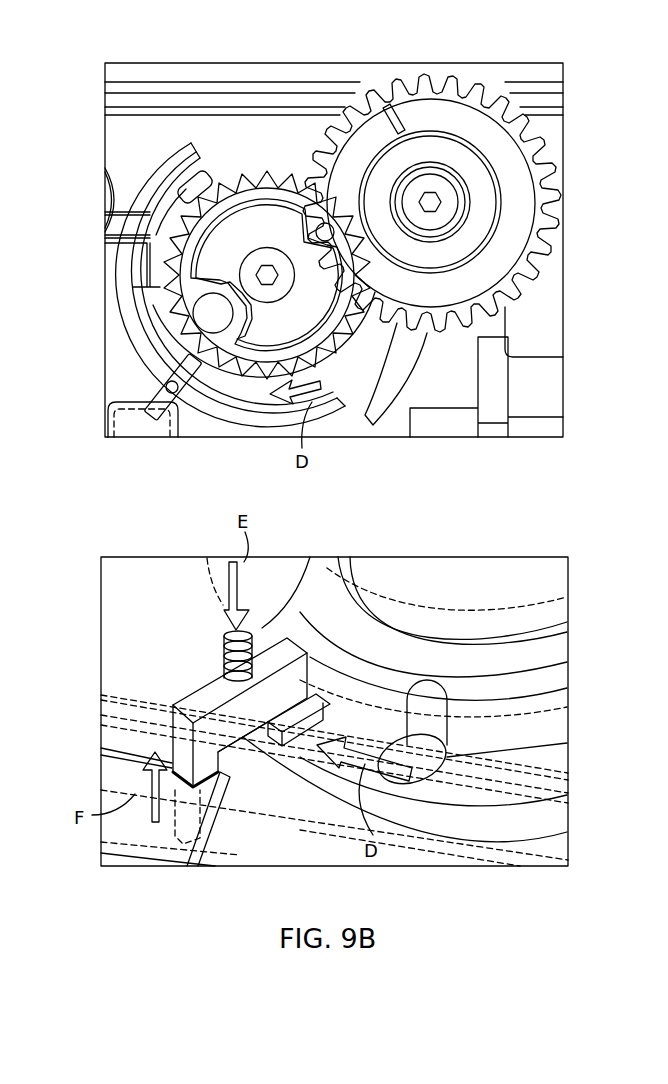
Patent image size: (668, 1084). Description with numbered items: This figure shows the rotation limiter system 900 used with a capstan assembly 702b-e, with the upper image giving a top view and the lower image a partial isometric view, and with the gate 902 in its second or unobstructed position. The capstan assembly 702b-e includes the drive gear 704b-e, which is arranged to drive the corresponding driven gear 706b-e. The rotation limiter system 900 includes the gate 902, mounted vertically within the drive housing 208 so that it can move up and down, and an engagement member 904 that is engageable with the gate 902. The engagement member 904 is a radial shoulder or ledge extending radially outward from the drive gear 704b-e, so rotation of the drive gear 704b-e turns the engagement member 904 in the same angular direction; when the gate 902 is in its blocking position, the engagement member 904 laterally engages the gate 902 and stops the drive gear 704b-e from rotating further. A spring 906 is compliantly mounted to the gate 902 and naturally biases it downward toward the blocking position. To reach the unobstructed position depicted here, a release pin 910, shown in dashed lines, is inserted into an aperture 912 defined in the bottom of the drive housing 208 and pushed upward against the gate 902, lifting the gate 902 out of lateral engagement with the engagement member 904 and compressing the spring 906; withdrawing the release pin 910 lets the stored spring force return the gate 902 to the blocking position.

The drive housing 208 is at (167, 160).
The capstan assembly 702b-e is at (92, 96).
The drive gear 704b-e is at (262, 172).
The driven gear 706b-e is at (432, 72).
The rotation limiter system 900 is at (243, 493).
The gate 902 is at (153, 414).
The engagement member 904 is at (147, 305).
The spring 906 is at (166, 387).
The release pin 910 is at (203, 860).
The aperture 912 is at (236, 776).